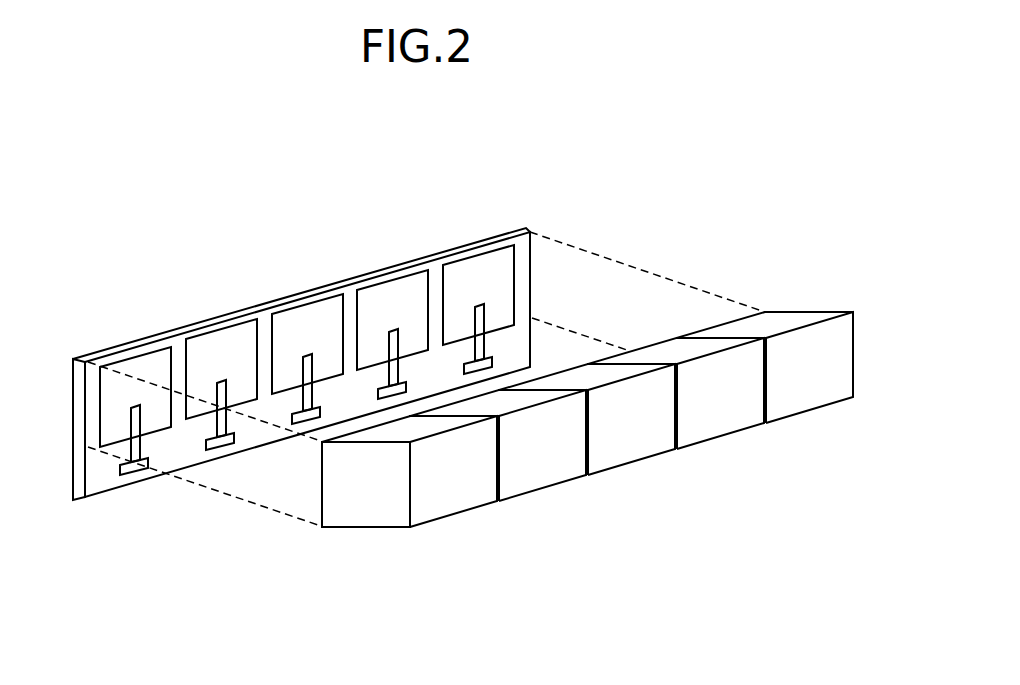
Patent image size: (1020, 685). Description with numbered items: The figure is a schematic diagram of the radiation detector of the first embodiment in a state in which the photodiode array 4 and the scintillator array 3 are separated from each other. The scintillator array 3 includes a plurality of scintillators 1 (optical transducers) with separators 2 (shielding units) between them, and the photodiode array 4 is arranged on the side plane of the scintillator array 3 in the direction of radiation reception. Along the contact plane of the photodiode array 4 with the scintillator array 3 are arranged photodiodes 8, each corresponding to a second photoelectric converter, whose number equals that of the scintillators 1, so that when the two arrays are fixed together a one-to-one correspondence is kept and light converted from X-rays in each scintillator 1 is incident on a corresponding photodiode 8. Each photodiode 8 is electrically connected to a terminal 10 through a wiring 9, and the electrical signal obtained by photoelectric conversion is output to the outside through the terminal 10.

The scintillator 1 is at (463, 492).
The separator 2 is at (502, 493).
The scintillator array 3 is at (606, 400).
The photodiode array 4 is at (338, 352).
The photodiode 8 is at (143, 373).
The wiring 9 is at (141, 453).
The terminal 10 is at (138, 476).